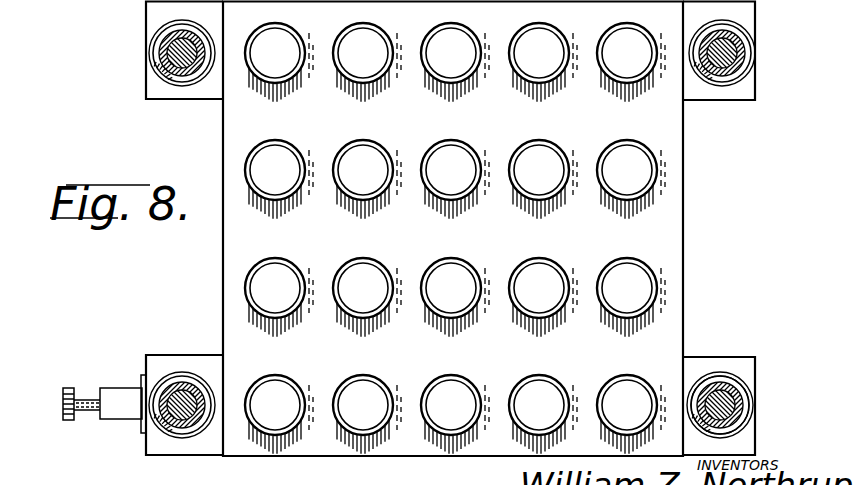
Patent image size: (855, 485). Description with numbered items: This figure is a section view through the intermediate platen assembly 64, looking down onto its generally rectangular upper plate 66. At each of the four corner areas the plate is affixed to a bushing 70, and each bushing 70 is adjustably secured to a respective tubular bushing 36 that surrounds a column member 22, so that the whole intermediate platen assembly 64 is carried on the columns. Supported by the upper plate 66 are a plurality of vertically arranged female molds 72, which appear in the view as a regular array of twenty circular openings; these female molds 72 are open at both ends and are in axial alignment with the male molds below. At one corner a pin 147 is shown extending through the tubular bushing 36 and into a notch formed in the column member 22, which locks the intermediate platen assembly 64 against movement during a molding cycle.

The column member 22 is at (170, 55).
The tubular bushing 36 is at (707, 385).
The intermediate platen assembly 64 is at (434, 236).
The upper plate 66 is at (663, 240).
The bushing 70 is at (745, 85).
The female molds 72 is at (439, 153).
The pin 147 is at (91, 413).